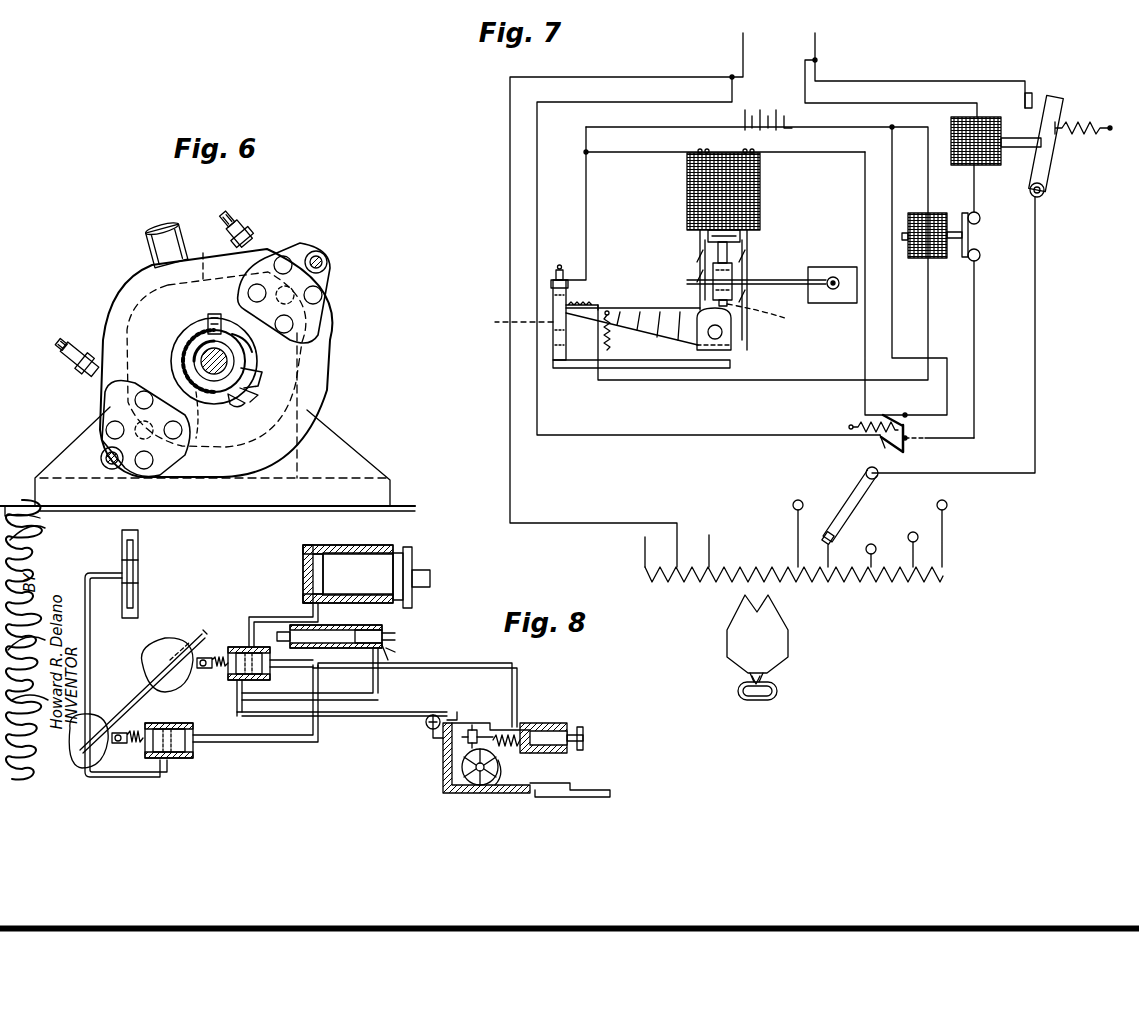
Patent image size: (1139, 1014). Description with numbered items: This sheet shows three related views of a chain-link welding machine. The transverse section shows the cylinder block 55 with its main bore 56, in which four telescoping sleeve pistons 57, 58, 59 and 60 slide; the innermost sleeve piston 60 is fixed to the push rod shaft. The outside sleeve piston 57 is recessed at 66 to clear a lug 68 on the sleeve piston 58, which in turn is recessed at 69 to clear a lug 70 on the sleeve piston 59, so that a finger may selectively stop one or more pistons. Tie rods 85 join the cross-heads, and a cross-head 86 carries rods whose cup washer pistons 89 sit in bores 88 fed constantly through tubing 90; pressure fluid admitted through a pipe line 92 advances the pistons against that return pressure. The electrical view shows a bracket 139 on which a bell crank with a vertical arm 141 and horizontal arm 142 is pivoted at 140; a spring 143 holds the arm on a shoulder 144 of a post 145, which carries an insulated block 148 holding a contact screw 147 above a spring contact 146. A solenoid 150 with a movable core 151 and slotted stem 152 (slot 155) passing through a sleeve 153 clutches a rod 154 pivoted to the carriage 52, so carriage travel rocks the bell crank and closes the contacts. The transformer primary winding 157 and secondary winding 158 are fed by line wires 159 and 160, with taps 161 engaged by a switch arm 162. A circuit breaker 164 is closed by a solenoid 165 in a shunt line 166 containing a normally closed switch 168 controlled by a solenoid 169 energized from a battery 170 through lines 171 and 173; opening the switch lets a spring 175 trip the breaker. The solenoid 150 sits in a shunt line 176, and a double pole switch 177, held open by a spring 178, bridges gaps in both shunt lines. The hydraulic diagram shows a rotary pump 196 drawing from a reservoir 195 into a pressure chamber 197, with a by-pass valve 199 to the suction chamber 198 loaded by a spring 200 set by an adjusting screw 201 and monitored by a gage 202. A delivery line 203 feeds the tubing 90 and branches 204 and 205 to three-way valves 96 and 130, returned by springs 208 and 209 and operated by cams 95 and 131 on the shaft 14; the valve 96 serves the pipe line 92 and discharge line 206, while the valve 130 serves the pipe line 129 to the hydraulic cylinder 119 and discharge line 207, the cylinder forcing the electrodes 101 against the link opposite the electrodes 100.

In FIG. 6, the cylinder block 55 is at (330, 373).
In FIG. 8, the cylinder block 55 is at (330, 545).
In FIG. 8, the main bore 56 is at (305, 548).
In FIG. 6, the outside sleeve piston 57 is at (182, 330).
In FIG. 8, the outside sleeve piston 57 is at (358, 560).
In FIG. 6, the sleeve piston 58 is at (186, 345).
In FIG. 6, the sleeve piston 59 is at (194, 355).
In FIG. 6, the innermost sleeve piston 60 is at (200, 365).
In FIG. 6, the recess 66 is at (252, 374).
In FIG. 6, the lug 68 is at (236, 398).
In FIG. 6, the recess 69 is at (245, 350).
In FIG. 6, the lug 70 is at (250, 390).
In FIG. 6, the tie rods 85 is at (327, 263).
In FIG. 6, the cross-head 86 is at (208, 426).
In FIG. 6, the bores 88 is at (330, 310).
In FIG. 8, the bores 88 is at (390, 637).
In FIG. 8, the cup washer piston 89 is at (340, 630).
In FIG. 6, the tubing 90 is at (232, 218).
In FIG. 8, the tubing 90 is at (393, 652).
In FIG. 6, the pipe line 92 is at (148, 245).
In FIG. 8, the pipe line 92 is at (278, 612).
In FIG. 8, the shaft 14 is at (192, 632).
In FIG. 8, the cam 95 is at (168, 640).
In FIG. 8, the three-way valve 96 is at (237, 648).
In FIG. 8, the hydraulic cylinder 119 is at (138, 563).
In FIG. 8, the pipe line 129 is at (90, 645).
In FIG. 8, the three-way valve 130 is at (185, 760).
In FIG. 8, the cam 131 is at (90, 722).
In FIG. 8, the reservoir 195 is at (608, 790).
In FIG. 8, the rotary pump 196 is at (498, 770).
In FIG. 8, the pressure chamber 197 is at (445, 742).
In FIG. 8, the suction chamber 198 is at (540, 753).
In FIG. 8, the by-pass valve 199 is at (472, 725).
In FIG. 8, the spring 200 is at (505, 735).
In FIG. 8, the adjusting screw 201 is at (583, 737).
In FIG. 8, the gage 202 is at (425, 723).
In FIG. 8, the delivery line 203 is at (420, 693).
In FIG. 8, the branch 204 is at (235, 682).
In FIG. 8, the branch 205 is at (240, 716).
In FIG. 8, the discharge line 206 is at (298, 670).
In FIG. 8, the discharge line 207 is at (240, 742).
In FIG. 8, the spring 208 is at (220, 655).
In FIG. 8, the spring 209 is at (135, 732).
In FIG. 7, the carriage 52 is at (840, 268).
In FIG. 7, the electrodes 100 is at (765, 677).
In FIG. 7, the electrodes 101 is at (745, 682).
In FIG. 7, the bracket 139 is at (575, 368).
In FIG. 7, the pivot 140 is at (722, 332).
In FIG. 7, the vertical arm 141 is at (700, 256).
In FIG. 7, the horizontal arm 142 is at (648, 312).
In FIG. 7, the spring 143 is at (612, 340).
In FIG. 7, the shoulder 144 is at (509, 311).
In FIG. 7, the post 145 is at (553, 333).
In FIG. 7, the spring contact 146 is at (580, 305).
In FIG. 7, the contact screw 147 is at (562, 268).
In FIG. 7, the block 148 is at (556, 275).
In FIG. 7, the solenoid 150 is at (762, 178).
In FIG. 7, the movable core 151 is at (708, 236).
In FIG. 7, the stem 152 is at (727, 250).
In FIG. 7, the sleeve 153 is at (732, 275).
In FIG. 7, the rod 154 is at (780, 282).
In FIG. 7, the slot 155 is at (766, 315).
In FIG. 7, the primary winding 157 is at (712, 583).
In FIG. 7, the secondary winding 158 is at (785, 600).
In FIG. 7, the line wire 159 is at (743, 42).
In FIG. 7, the line wire 160 is at (815, 45).
In FIG. 7, the taps 161 is at (913, 531).
In FIG. 7, the switch arm 162 is at (840, 490).
In FIG. 7, the circuit breaker 164 is at (1052, 157).
In FIG. 7, the solenoid 165 is at (985, 165).
In FIG. 7, the shunt line 166 is at (770, 437).
In FIG. 7, the switch 168 is at (968, 232).
In FIG. 7, the solenoid 169 is at (930, 258).
In FIG. 7, the battery 170 is at (775, 103).
In FIG. 7, the line 171 is at (918, 128).
In FIG. 7, the line 173 is at (586, 188).
In FIG. 7, the spring 175 is at (1088, 122).
In FIG. 7, the shunt line 176 is at (855, 166).
In FIG. 7, the double pole switch 177 is at (910, 448).
In FIG. 7, the spring 178 is at (860, 424).